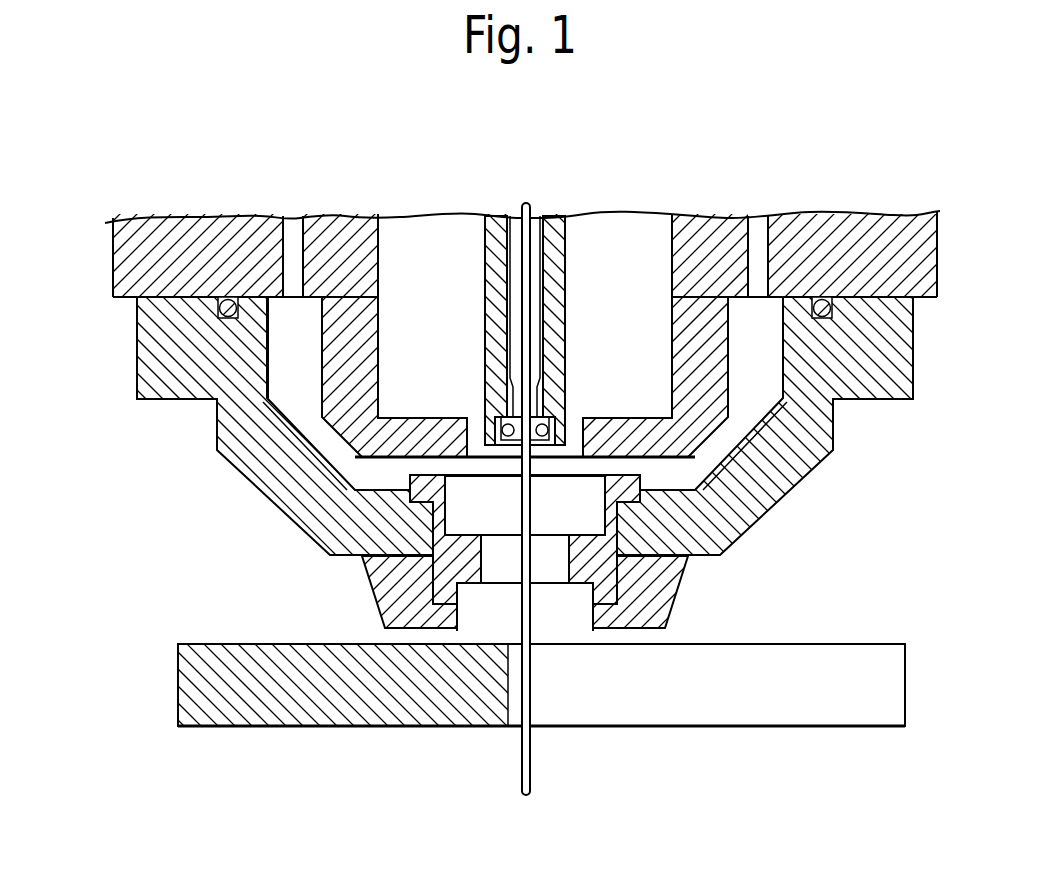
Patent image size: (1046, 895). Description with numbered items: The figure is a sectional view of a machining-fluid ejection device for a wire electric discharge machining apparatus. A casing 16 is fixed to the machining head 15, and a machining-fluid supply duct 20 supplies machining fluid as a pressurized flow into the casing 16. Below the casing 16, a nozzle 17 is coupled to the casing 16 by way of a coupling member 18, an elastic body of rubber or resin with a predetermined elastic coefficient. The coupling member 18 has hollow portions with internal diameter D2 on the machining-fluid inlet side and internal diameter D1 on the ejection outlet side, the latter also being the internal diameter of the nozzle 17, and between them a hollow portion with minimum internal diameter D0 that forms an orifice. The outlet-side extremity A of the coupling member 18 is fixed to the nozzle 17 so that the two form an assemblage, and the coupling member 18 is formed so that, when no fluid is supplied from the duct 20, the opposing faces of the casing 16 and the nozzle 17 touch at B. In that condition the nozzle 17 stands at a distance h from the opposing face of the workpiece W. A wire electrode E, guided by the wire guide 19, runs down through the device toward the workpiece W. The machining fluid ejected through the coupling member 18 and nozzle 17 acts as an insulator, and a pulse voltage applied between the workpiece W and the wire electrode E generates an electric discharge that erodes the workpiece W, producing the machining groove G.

The machining head 15 is at (117, 264).
The casing 16 is at (217, 434).
The nozzle 17 is at (373, 590).
The coupling member 18 is at (684, 571).
The wire guide 19 is at (547, 418).
The machining-fluid supply duct 20 is at (294, 222).
The workpiece W is at (185, 681).
The wire electrode E is at (522, 762).
The machining groove G is at (597, 713).
The machining-fluid outlet side extremity A is at (443, 608).
The contact point of opposing faces B is at (322, 557).
The distance h is at (735, 605).
The minimum internal diameter D0 is at (483, 568).
The internal diameter on machining-fluid ejection outlet side D1 is at (459, 613).
The internal diameter on machining-fluid inlet side D2 is at (447, 518).